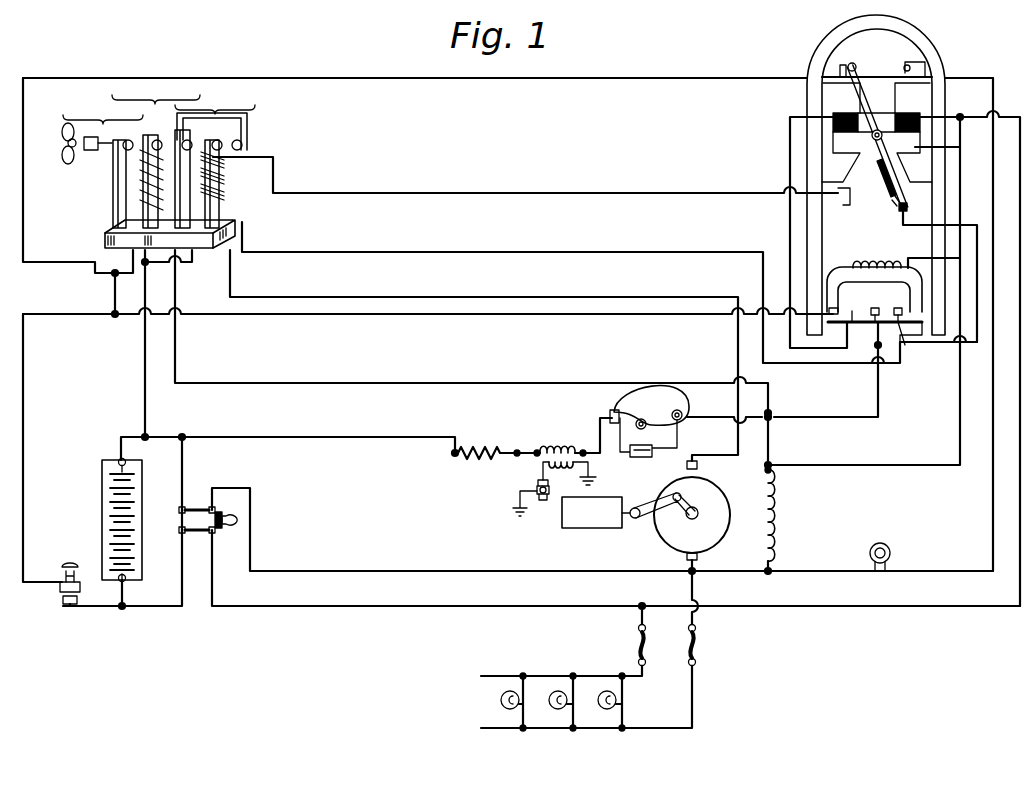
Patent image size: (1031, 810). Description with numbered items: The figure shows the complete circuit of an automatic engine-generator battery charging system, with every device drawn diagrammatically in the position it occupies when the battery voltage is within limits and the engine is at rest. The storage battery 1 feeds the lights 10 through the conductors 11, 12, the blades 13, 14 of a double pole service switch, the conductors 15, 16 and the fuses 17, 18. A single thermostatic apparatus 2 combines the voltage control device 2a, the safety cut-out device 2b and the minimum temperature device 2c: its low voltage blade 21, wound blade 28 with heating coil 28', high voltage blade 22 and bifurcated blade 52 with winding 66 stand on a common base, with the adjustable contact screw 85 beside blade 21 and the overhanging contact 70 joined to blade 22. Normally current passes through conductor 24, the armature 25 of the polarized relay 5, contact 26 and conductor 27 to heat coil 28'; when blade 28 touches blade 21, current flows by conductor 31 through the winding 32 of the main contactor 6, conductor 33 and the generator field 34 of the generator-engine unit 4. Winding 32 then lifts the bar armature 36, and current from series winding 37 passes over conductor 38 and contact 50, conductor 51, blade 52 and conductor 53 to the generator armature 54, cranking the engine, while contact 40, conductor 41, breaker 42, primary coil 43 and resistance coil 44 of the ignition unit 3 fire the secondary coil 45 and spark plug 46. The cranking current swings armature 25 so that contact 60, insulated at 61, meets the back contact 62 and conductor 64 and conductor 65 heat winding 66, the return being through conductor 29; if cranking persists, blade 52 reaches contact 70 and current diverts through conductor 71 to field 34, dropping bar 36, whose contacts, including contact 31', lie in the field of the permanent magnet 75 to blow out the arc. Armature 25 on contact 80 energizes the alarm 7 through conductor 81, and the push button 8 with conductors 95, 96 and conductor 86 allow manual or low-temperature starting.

The storage battery 1 is at (107, 533).
The thermostatic control apparatus 2 is at (160, 146).
The temperature compensated voltage control device 2a is at (156, 74).
The thermostatic safety cut-out device 2b is at (215, 79).
The minimum environment temperature control device 2c is at (103, 106).
The ignition coil, breaker and condenser 3 is at (635, 419).
The generator-engine unit 4 is at (654, 516).
The polarized relay 5 is at (875, 169).
The main relay or contactor 6 is at (882, 308).
The alarm 7 is at (896, 549).
The push button 8 is at (57, 586).
The lights 10 is at (600, 690).
The conductor 11 is at (171, 608).
The conductor 12 is at (116, 444).
The blade of double pole service switch 13 is at (197, 533).
The blade of double pole service switch 14 is at (196, 507).
The conductor 15 is at (384, 607).
The conductor 16 is at (396, 571).
The fuse 17 is at (638, 646).
The fuse 18 is at (698, 645).
The low voltage thermostat blade 21 is at (122, 176).
The high voltage thermostat blade 22 is at (191, 152).
The conductor 24 is at (962, 148).
The armature of polarized relay 25 is at (868, 90).
The contact 26 is at (845, 65).
The conductor 27 is at (578, 78).
The thermostat blade 28 is at (131, 181).
The heating coil 28' is at (199, 121).
The conductor 29 is at (145, 352).
The conductor 31 is at (428, 310).
The contact 31' is at (852, 329).
The winding of main contactor 32 is at (870, 266).
The conductor 33 is at (960, 413).
The generator field 34 is at (771, 524).
The bar armature 36 is at (912, 347).
The series winding of polarized relay 37 is at (926, 118).
The conductor 38 is at (789, 147).
The contact 40 is at (876, 301).
The conductor 41 is at (857, 418).
The breaker 42 is at (670, 409).
The primary coil 43 is at (555, 452).
The resistance unit or coil 44 is at (484, 452).
The secondary coil 45 is at (557, 465).
The spark plug 46 is at (540, 515).
The contact 50 is at (901, 301).
The conductor 51 is at (637, 251).
The bifurcated thermostat blade 52 is at (228, 178).
The conductor 53 is at (233, 290).
The armature of generator 54 is at (702, 490).
The contact 60 is at (892, 213).
The insulation 61 is at (916, 198).
The rigid back contact 62 is at (847, 204).
The conductor 64 is at (980, 291).
The conductor 65 is at (433, 193).
The winding of thermostat blade 52 66 is at (226, 187).
The overhanging contact 70 is at (250, 146).
The conductor 71 is at (177, 353).
The permanent magnet 75 is at (822, 50).
The contact 80 is at (927, 64).
The conductor 81 is at (995, 108).
The contact screw 85 is at (66, 147).
The conductor 86 is at (100, 200).
The conductor 95 is at (101, 607).
The conductor 96 is at (24, 490).